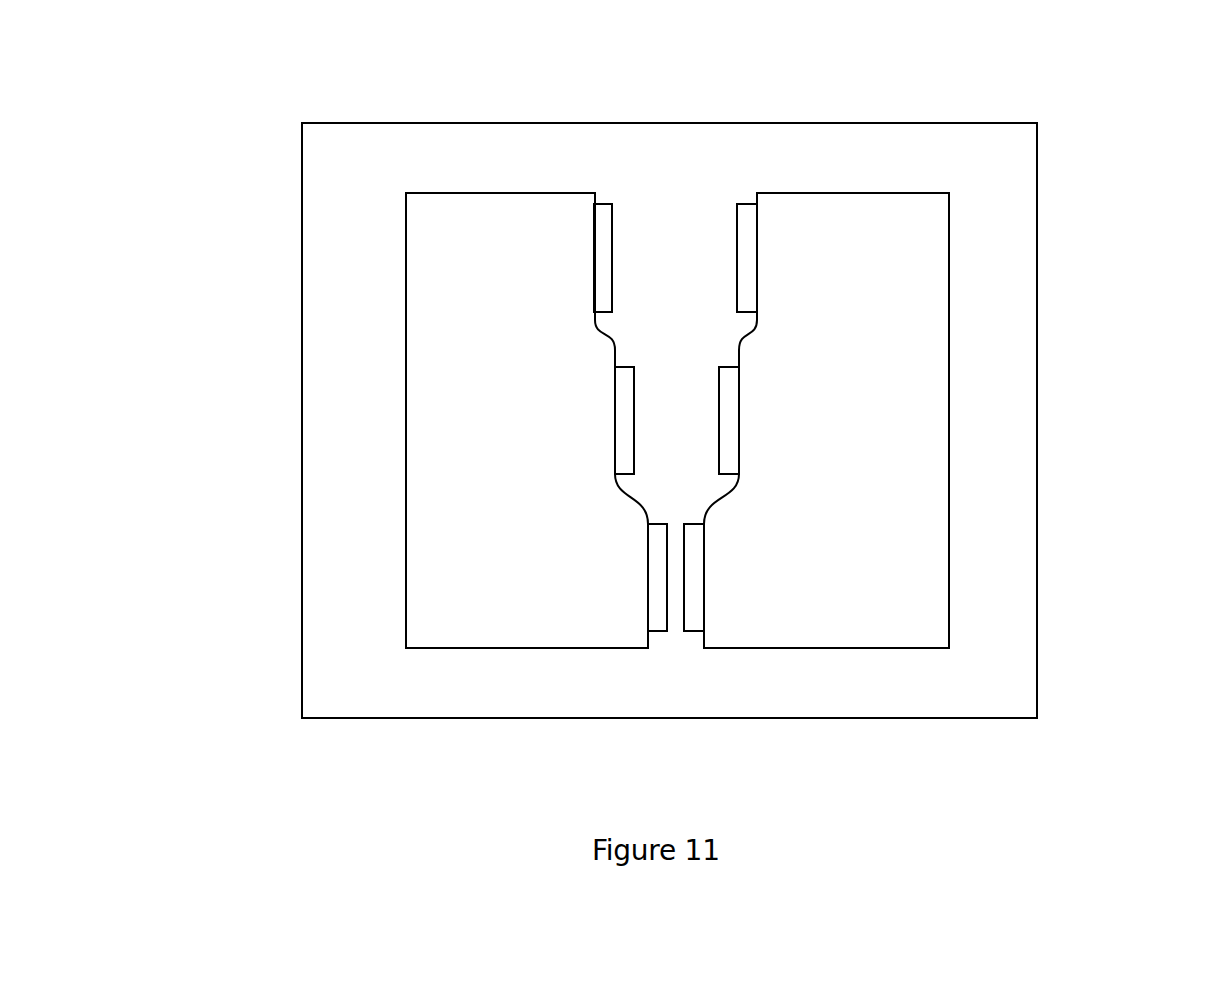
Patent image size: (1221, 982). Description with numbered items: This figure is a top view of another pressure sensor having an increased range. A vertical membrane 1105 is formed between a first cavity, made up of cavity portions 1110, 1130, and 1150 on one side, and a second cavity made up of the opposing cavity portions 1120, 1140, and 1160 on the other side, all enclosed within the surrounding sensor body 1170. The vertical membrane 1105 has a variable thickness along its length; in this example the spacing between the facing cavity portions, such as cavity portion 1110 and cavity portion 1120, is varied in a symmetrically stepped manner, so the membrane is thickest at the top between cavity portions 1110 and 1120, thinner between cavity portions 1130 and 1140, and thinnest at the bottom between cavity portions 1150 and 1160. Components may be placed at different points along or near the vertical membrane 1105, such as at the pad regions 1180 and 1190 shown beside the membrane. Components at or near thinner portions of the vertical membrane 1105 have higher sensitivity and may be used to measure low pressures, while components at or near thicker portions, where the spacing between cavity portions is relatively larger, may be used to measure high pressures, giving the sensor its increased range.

The vertical membrane 1105 is at (668, 245).
The cavity portion 1110 is at (495, 245).
The cavity portion 1120 is at (903, 247).
The cavity portion 1130 is at (473, 417).
The upper right pad 1140 is at (900, 417).
The cavity portion 1150 is at (481, 613).
The middle right pad 1160 is at (908, 593).
The outer housing 1170 is at (599, 193).
The middle left pad 1180 is at (621, 448).
The lower right pad 1190 is at (652, 595).